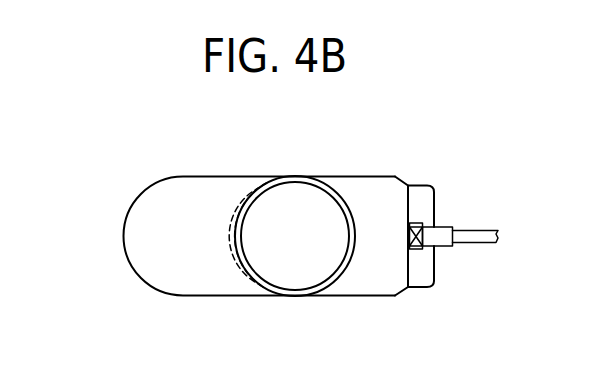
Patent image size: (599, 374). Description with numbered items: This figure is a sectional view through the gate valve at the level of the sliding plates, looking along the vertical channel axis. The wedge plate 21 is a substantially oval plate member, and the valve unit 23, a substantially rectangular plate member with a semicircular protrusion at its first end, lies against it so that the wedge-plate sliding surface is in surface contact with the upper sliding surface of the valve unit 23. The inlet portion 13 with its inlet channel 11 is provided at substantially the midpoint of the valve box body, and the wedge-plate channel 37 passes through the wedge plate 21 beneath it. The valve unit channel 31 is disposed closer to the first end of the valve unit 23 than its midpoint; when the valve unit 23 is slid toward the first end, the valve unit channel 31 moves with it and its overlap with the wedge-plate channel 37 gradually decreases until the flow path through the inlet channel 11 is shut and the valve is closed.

The wedge plate 21 is at (123, 232).
The valve unit 23 is at (372, 175).
The valve unit channel 31 is at (262, 209).
The inlet portion 13 is at (313, 185).
The inlet channel 11 is at (297, 271).
The wedge-plate channel 37 is at (295, 225).